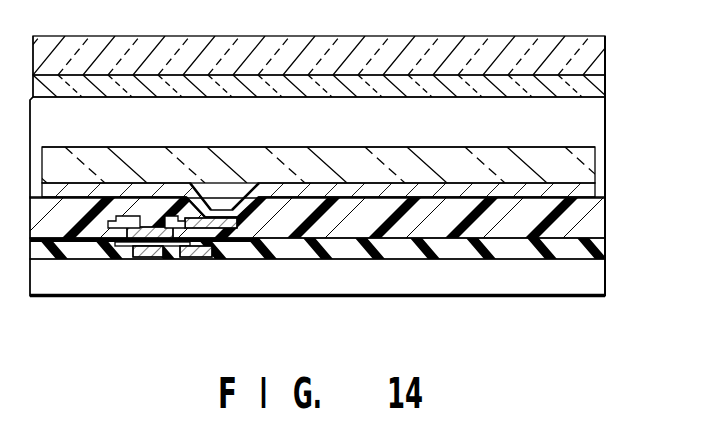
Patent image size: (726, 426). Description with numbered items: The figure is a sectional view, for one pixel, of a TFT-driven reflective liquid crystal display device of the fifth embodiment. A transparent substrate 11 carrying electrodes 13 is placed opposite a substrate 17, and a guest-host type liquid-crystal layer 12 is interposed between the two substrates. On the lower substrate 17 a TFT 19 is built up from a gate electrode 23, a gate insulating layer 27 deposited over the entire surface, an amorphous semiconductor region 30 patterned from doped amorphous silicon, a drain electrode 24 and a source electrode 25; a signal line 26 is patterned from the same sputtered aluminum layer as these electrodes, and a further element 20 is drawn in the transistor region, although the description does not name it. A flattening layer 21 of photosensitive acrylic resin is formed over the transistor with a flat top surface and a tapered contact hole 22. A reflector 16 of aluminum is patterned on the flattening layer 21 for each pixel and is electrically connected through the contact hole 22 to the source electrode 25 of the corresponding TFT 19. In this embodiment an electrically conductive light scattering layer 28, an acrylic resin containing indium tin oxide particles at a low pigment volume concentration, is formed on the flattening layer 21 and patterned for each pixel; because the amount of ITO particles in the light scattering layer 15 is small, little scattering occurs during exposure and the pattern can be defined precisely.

The substrate 11 is at (600, 53).
The electrodes 13 is at (600, 84).
The liquid-crystal layer 12 is at (597, 114).
The light scattering layer 15 is at (588, 152).
The reflector 16 is at (596, 182).
The flattening layer 21 is at (605, 219).
The gate insulating layer 27 is at (605, 250).
The substrate 17 is at (192, 282).
The TFT 19 is at (158, 224).
The gate electrode 20 is at (210, 259).
The contact hole 22 is at (252, 241).
The gate electrode 23 is at (153, 259).
The drain electrode 24 is at (130, 227).
The source electrode 25 is at (175, 222).
The signal line 26 is at (107, 218).
The electrically conductive light scattering layer 28 is at (300, 123).
The amorphous semiconductor region 30 is at (114, 247).